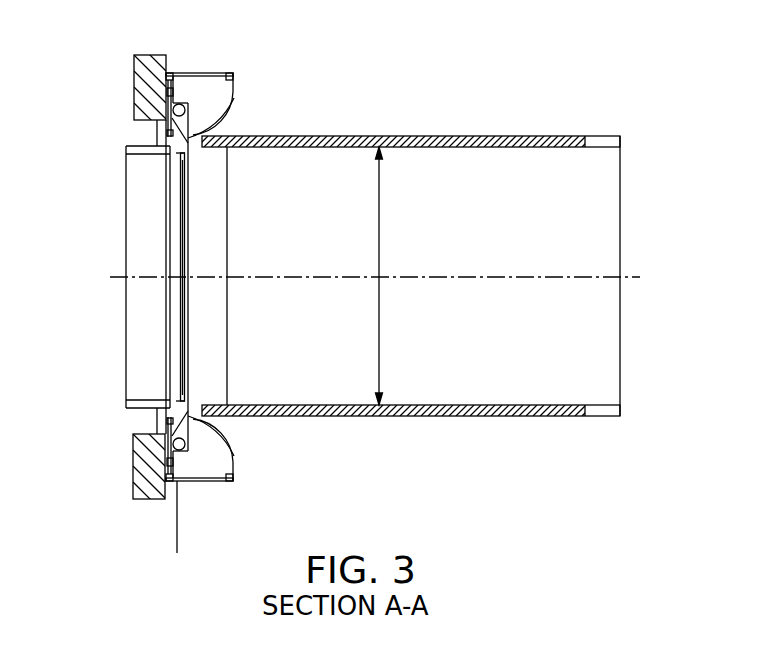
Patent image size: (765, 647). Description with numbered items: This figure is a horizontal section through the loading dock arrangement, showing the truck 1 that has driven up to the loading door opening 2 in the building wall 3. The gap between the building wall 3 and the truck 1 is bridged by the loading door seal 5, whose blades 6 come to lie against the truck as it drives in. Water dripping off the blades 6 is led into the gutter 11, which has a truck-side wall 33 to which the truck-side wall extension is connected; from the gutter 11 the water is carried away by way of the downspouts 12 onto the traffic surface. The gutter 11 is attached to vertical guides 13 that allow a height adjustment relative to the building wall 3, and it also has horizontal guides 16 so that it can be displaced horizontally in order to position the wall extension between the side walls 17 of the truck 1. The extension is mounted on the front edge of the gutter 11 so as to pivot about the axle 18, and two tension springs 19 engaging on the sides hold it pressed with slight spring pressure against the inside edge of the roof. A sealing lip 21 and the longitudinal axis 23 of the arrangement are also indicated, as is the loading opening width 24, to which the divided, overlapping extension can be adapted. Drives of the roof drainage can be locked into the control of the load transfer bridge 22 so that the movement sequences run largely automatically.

The truck 1 is at (605, 225).
The loading door opening 2 is at (157, 427).
The building wall 3 is at (142, 80).
The loading door seal 5 is at (183, 73).
The blade 6 is at (235, 101).
The gutter 11 is at (177, 313).
The downspout 12 is at (185, 107).
The vertical guides 13 is at (167, 93).
The horizontal guide 16 is at (167, 132).
The side wall (truck) 17 is at (417, 136).
The axle 18 is at (188, 222).
The tension spring 19 is at (177, 153).
The sealing lip 21 is at (182, 263).
The load transfer bridge 22 is at (143, 368).
The longitudinal axis 23 is at (176, 550).
The loading opening width 24 is at (386, 229).
The truck-side wall 33 is at (225, 116).